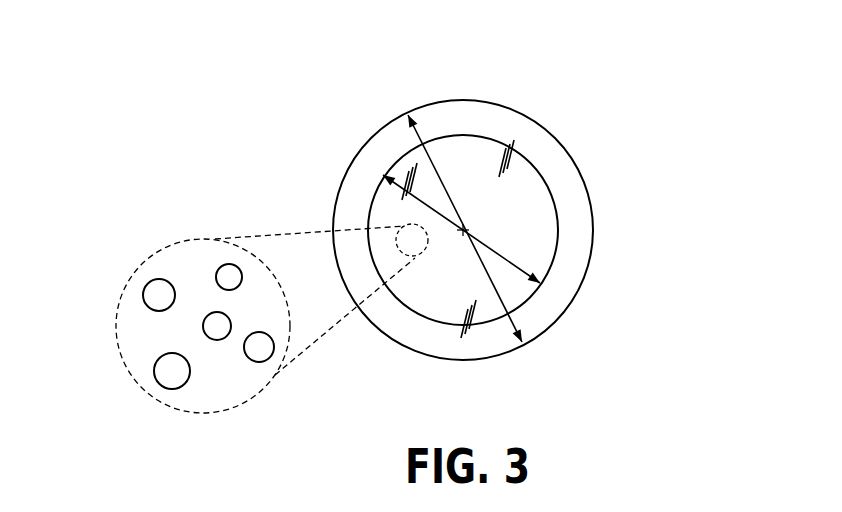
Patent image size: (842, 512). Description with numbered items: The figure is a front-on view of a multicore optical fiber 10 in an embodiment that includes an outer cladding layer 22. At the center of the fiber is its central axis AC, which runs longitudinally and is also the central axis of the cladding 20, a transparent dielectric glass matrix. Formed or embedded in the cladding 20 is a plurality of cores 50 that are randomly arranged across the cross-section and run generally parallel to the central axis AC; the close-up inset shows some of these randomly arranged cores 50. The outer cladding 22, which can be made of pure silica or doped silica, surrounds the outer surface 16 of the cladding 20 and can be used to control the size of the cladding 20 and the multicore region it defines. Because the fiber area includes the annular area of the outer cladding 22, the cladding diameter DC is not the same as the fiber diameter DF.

The multicore optical fiber 10 is at (335, 92).
The outer surface 16 is at (467, 132).
The cladding 20 is at (507, 278).
The outer cladding layer 22 is at (540, 155).
The cores 50 is at (217, 275).
The fiber diameter DF is at (430, 162).
The cladding diameter DC is at (507, 260).
The central axis AC is at (463, 230).